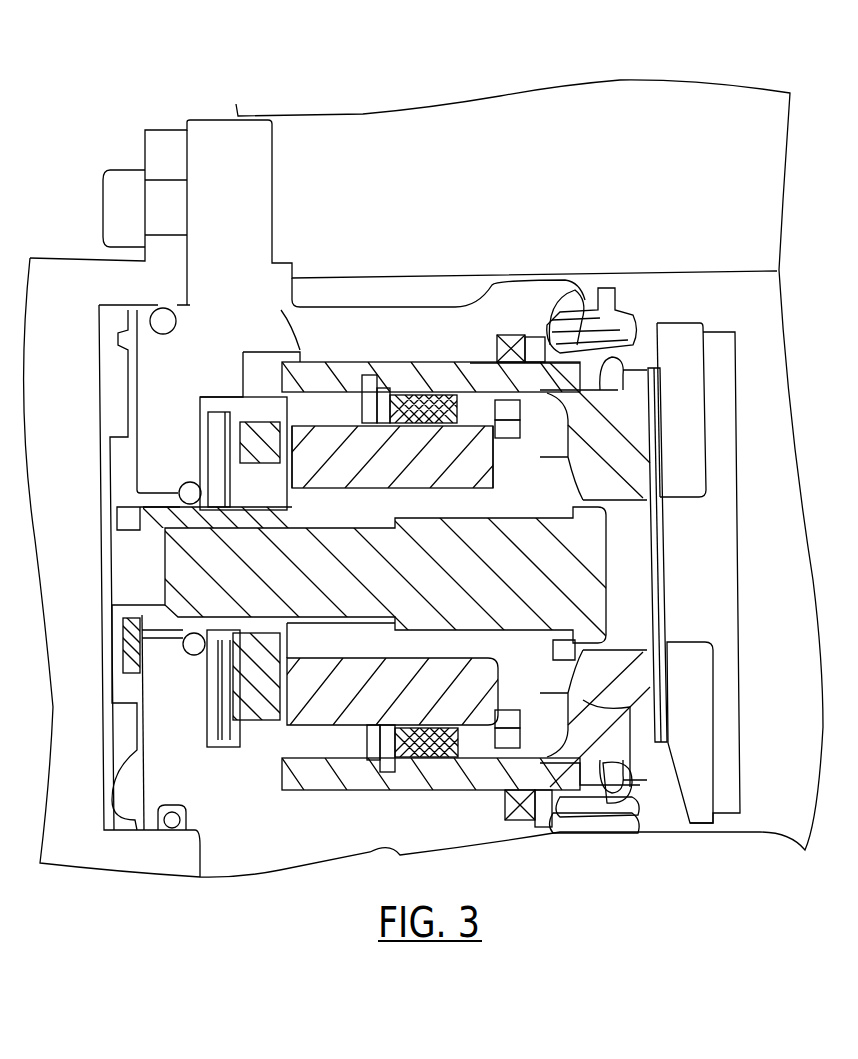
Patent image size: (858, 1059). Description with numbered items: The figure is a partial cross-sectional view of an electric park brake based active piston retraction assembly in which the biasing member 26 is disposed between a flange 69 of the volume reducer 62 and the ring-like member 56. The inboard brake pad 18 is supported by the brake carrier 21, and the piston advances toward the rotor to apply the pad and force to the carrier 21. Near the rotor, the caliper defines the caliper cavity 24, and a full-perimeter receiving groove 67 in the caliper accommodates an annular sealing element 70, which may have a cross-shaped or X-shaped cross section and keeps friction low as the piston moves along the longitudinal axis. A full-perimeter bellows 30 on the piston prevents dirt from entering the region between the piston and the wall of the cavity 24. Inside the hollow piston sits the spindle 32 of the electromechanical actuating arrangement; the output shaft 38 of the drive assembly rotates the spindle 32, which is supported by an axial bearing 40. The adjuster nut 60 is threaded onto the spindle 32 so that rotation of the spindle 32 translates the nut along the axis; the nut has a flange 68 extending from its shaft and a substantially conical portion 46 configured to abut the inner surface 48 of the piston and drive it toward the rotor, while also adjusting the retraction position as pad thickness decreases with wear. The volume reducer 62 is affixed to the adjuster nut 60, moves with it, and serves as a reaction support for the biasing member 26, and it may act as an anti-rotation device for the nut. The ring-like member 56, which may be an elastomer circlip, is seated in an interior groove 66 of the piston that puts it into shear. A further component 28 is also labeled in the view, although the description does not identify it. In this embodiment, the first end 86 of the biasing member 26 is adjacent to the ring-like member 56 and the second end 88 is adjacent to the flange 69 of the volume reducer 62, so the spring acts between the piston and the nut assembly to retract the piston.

The inboard brake pad 18 is at (717, 563).
The brake carrier 21 is at (693, 335).
The caliper cavity 24 is at (260, 793).
The biasing member 26 is at (437, 366).
The sleeve 28 is at (387, 364).
The bellows 30 is at (628, 328).
The spindle 32 is at (587, 548).
The output shaft 38 is at (127, 563).
The axial bearing 40 is at (243, 417).
The conical portion 46 is at (588, 500).
The inner surface 48 is at (638, 525).
The ring-like member 56 is at (367, 365).
The adjuster nut 60 is at (580, 690).
The volume reducer 62 is at (323, 478).
The interior groove 66 is at (378, 398).
The receiving groove 67 is at (510, 335).
The flange 68 is at (550, 323).
The flange 69 is at (497, 437).
The sealing element 70 is at (520, 337).
The first end 86 is at (277, 319).
The second end 88 is at (455, 445).